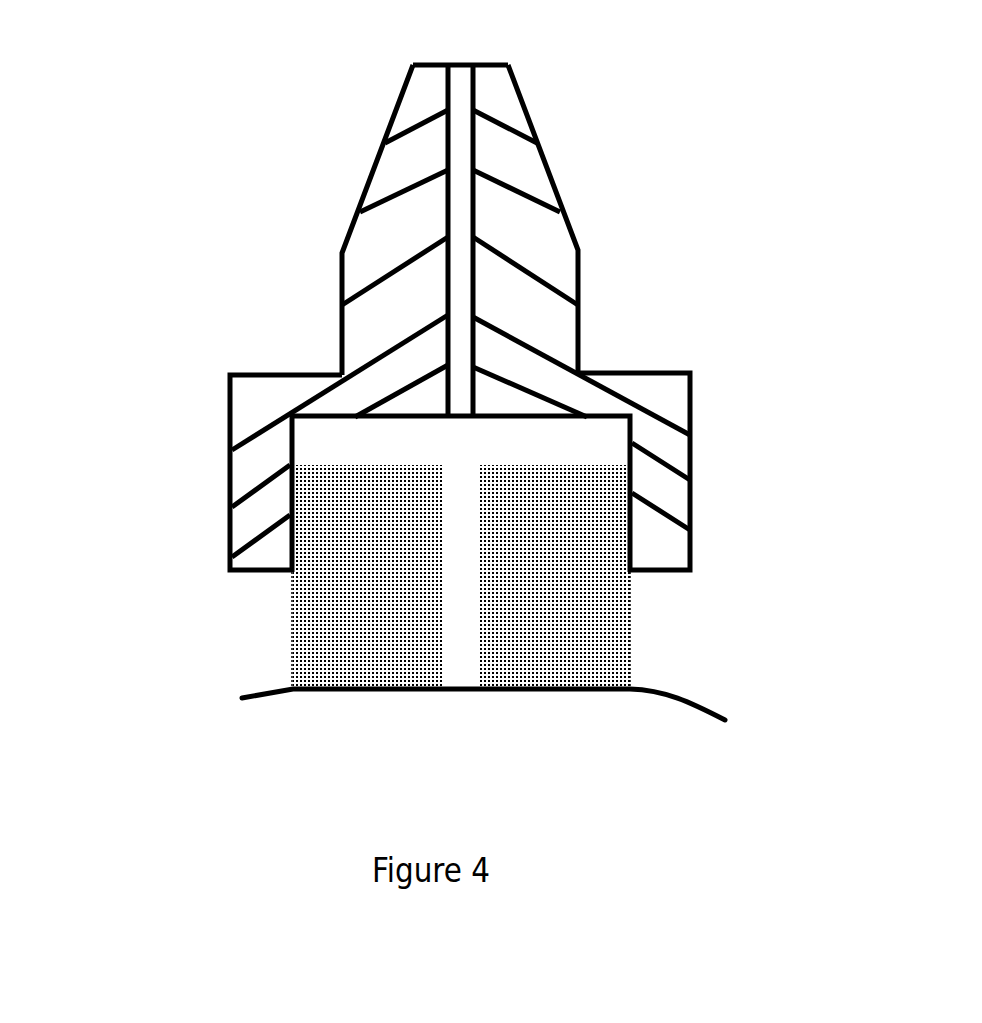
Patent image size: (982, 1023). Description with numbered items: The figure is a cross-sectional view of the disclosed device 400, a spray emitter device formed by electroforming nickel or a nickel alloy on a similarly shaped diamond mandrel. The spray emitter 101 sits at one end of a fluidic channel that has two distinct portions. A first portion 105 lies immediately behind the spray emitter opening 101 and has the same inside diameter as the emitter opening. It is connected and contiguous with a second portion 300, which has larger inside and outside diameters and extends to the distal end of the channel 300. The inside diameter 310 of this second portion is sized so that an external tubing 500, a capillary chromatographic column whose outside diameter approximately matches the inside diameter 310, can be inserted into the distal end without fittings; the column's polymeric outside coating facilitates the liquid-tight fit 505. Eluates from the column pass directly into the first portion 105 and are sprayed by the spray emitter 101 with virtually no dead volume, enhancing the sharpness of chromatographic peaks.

The device 400 is at (238, 267).
The spray emitter 101 is at (458, 57).
The first portion of fluidic channel 105 is at (458, 163).
The inside diameter 310 is at (288, 455).
The second portion of fluidic channel 300 is at (484, 450).
The liquid-tight fit 505 is at (288, 535).
The external tubing 500 is at (665, 640).